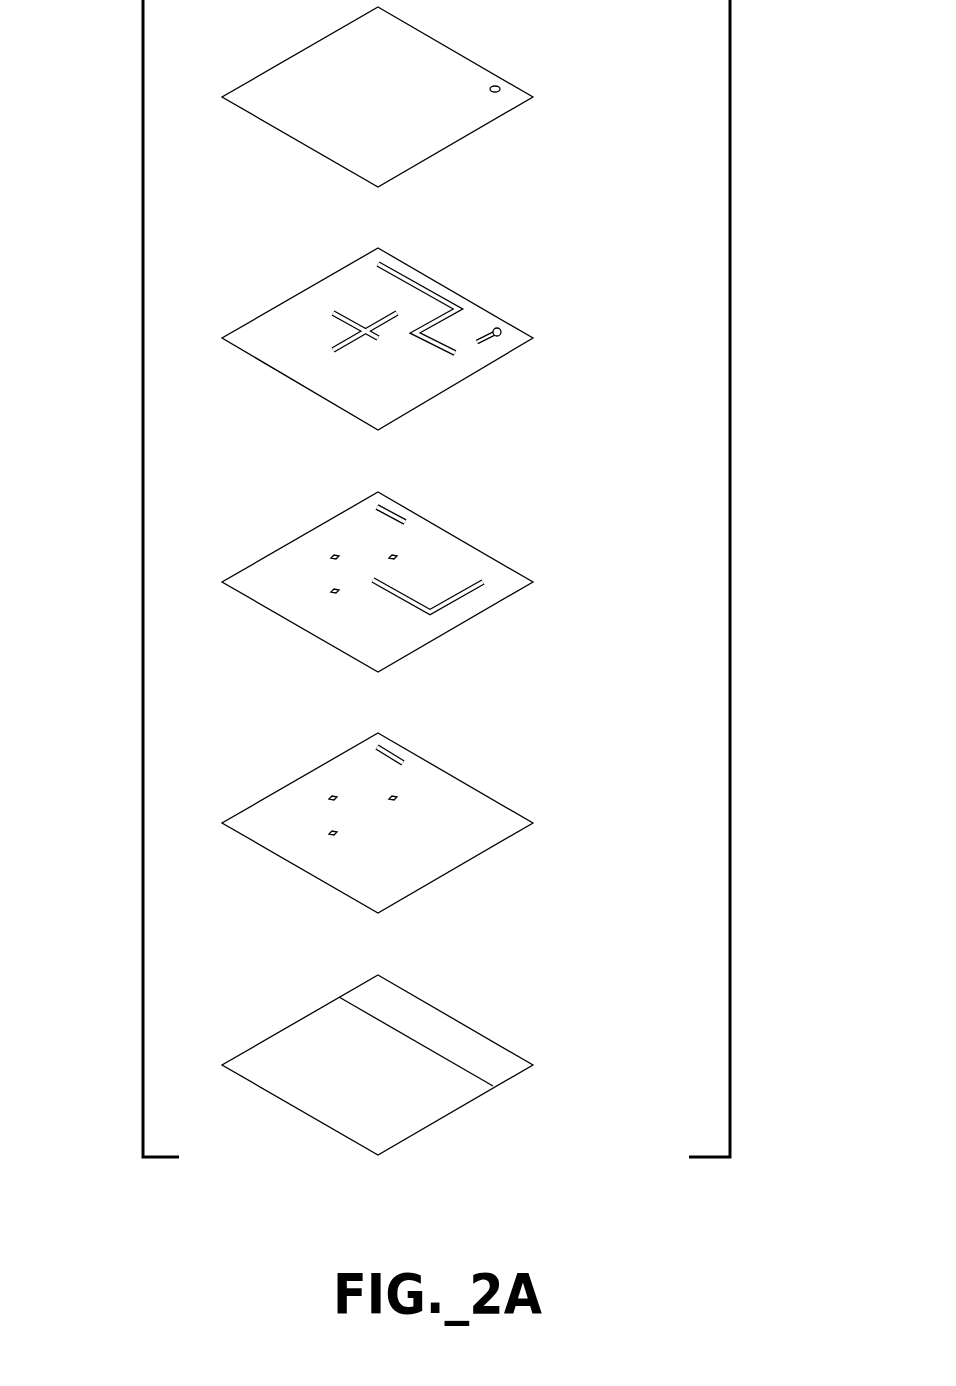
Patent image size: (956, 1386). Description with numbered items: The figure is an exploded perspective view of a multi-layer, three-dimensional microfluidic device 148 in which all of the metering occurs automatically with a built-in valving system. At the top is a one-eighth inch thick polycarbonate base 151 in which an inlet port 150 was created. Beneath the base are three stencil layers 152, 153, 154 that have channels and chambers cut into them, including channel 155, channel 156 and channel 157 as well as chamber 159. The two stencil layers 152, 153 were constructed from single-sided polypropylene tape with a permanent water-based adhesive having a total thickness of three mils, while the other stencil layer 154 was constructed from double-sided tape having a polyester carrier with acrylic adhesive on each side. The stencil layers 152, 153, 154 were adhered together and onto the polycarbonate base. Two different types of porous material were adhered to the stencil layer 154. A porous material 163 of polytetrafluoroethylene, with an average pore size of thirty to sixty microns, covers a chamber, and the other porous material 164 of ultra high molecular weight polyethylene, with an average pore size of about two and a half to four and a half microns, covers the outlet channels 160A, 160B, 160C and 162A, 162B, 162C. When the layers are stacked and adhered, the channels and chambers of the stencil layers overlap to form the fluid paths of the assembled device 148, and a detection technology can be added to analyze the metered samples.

The microfluidic device 148 is at (130, 583).
The inlet port 150 is at (495, 86).
The polycarbonate base 151 is at (513, 110).
The stencil layer 152 is at (507, 353).
The stencil layer 153 is at (510, 597).
The stencil layer 154 is at (510, 835).
The channel 155 is at (497, 330).
The channel 156 is at (428, 290).
The channel 157 is at (337, 343).
The chamber 159 is at (397, 515).
The outlet channel 160A is at (332, 588).
The outlet channel 160B is at (332, 554).
The outlet channel 160C is at (390, 555).
The outlet channel 162A is at (330, 830).
The outlet channel 162B is at (330, 796).
The outlet channel 162C is at (390, 797).
The porous material 163 is at (513, 1075).
The porous material 164 is at (443, 1117).